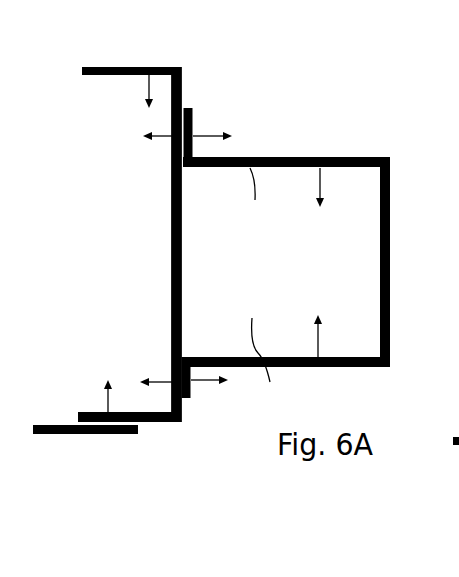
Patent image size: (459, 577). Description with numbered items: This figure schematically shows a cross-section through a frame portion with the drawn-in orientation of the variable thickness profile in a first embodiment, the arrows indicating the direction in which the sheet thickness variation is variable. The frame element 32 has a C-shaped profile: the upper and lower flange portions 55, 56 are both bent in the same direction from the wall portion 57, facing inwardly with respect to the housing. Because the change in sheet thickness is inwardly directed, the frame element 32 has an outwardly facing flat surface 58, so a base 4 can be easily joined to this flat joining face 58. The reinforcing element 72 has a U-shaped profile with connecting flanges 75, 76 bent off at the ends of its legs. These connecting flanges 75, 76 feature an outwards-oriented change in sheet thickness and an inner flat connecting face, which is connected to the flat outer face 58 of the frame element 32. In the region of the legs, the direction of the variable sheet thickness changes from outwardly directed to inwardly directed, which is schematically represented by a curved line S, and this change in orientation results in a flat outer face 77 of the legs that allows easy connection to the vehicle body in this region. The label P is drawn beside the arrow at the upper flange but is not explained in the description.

The base 4 is at (59, 443).
The frame element 32 is at (170, 55).
The upper flange portion 55 is at (102, 65).
The lower flange portion 56 is at (152, 422).
The wall portion 57 is at (172, 253).
The flat surface 58 is at (182, 237).
The reinforcing element 72 is at (363, 150).
The connecting flange 75 is at (193, 122).
The connecting flange 76 is at (190, 388).
The flat outer face of the legs 77 is at (303, 160).
The pressing direction P is at (142, 88).
The curved line S is at (247, 152).